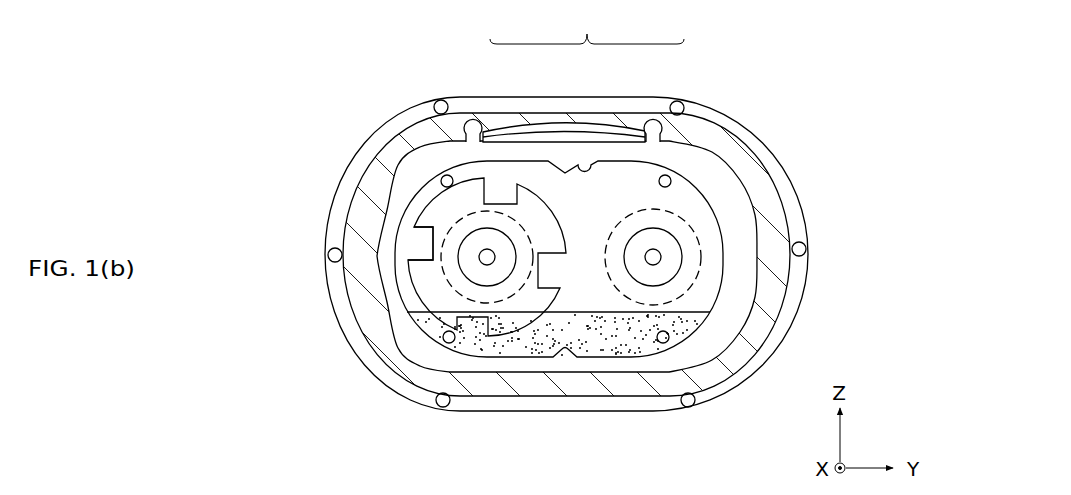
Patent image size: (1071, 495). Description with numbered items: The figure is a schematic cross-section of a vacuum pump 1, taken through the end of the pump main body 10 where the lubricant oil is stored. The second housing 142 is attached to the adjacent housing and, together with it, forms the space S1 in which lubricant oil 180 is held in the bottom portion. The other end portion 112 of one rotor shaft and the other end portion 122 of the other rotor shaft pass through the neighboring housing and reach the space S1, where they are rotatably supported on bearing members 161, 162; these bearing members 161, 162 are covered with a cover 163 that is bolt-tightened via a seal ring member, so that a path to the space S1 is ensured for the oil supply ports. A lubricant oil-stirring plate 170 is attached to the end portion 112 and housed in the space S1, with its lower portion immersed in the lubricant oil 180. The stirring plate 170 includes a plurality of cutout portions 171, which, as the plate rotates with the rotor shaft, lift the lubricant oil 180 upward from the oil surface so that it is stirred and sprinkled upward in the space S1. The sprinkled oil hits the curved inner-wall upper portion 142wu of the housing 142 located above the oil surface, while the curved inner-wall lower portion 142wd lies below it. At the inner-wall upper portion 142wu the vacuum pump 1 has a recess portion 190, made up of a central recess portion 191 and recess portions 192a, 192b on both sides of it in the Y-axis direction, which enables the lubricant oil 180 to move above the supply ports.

The vacuum pump 1 is at (862, 128).
The pump main body 10 is at (326, 203).
The other end portion of the rotor shaft 112 is at (488, 268).
The other end portion of the rotor shaft 122 is at (663, 282).
The second housing 142 is at (367, 320).
The inner-wall upper portion 142wu is at (712, 172).
The inner-wall lower portion 142wd is at (725, 338).
The bearing member 161 is at (460, 285).
The bearing member 162 is at (646, 287).
The cover 163 is at (714, 259).
The lubricant oil-stirring plate 170 is at (420, 275).
The cutout portions 171 is at (420, 238).
The lubricant oil 180 is at (636, 349).
The recess portion 190 is at (587, 26).
The recess portion 191 is at (565, 136).
The recess portion 192a is at (474, 141).
The recess portion 192b is at (653, 141).
The space S1 is at (731, 210).